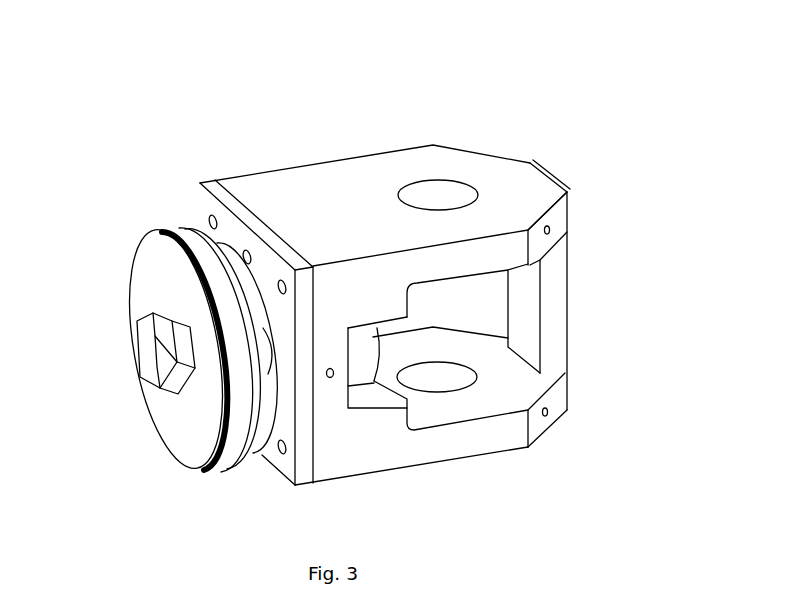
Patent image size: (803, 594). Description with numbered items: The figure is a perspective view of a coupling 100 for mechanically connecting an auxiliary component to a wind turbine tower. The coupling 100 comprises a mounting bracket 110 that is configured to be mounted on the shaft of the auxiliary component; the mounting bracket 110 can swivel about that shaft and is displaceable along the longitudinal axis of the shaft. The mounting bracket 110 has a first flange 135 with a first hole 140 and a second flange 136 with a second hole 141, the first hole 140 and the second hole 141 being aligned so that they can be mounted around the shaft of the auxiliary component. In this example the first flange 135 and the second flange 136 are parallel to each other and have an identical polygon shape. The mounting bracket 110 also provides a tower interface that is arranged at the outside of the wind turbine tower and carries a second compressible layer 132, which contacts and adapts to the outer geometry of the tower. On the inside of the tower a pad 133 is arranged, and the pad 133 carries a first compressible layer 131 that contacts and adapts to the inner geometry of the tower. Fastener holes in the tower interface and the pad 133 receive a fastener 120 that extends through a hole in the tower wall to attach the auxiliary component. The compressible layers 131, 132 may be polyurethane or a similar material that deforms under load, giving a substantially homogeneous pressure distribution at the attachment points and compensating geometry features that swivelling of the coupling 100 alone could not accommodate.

The coupling 100 is at (427, 101).
The mounting bracket 110 is at (272, 186).
The fastener 120 is at (133, 360).
The first compressible layer 131 is at (245, 455).
The second compressible layer 132 is at (197, 195).
The pad 133 is at (178, 440).
The first flange 135 is at (542, 197).
The second flange 136 is at (540, 391).
The first hole 140 is at (450, 188).
The second hole 141 is at (437, 377).